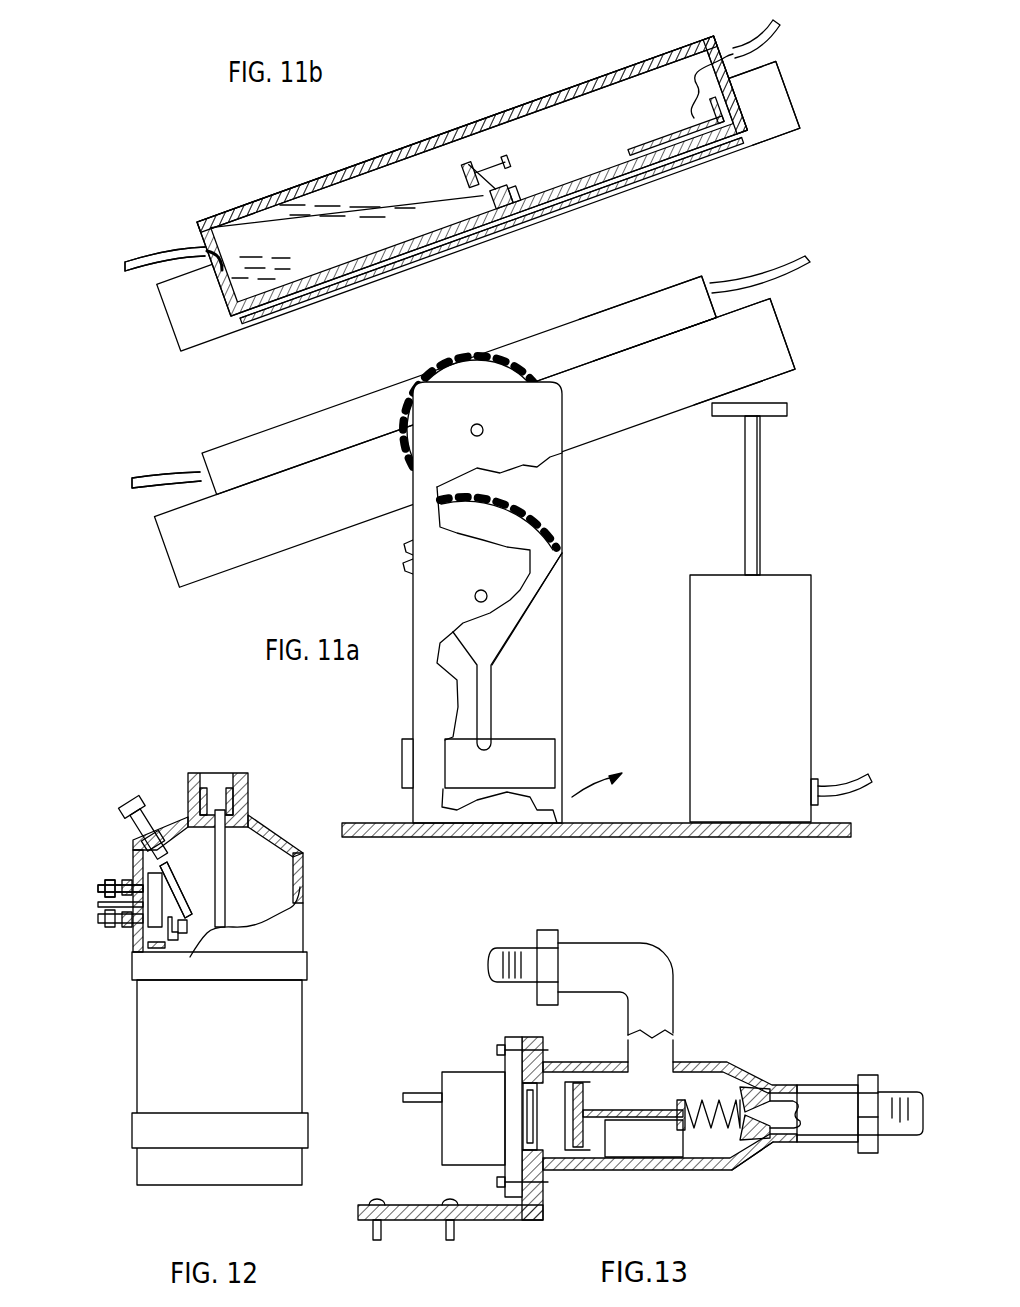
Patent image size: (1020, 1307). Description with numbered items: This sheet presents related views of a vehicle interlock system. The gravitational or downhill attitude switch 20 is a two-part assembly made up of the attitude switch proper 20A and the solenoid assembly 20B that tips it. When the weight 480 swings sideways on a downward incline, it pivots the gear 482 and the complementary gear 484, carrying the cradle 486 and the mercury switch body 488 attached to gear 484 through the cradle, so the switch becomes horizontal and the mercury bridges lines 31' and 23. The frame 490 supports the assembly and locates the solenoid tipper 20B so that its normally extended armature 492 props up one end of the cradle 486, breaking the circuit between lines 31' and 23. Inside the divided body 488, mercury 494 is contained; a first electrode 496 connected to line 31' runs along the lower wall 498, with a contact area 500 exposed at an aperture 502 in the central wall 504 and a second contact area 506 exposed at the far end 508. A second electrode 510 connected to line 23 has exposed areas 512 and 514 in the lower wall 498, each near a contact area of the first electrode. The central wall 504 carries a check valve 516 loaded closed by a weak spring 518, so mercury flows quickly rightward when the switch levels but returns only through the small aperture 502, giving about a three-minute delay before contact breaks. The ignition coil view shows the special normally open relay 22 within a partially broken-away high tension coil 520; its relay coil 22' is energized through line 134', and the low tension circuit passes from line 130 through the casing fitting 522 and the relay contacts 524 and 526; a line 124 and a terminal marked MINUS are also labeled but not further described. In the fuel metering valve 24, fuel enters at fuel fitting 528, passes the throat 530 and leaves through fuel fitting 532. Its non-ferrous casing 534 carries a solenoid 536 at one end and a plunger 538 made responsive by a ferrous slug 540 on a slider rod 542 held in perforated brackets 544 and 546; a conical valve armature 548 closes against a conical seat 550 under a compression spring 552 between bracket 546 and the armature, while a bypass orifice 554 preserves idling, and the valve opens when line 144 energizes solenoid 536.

In FIG. 11a, the gravitational attitude switch 20 is at (823, 317).
In FIG. 11a, the attitude switch proper 20A is at (598, 320).
In FIG. 11a, the solenoid assembly 20B is at (818, 647).
In FIG. 11b, the line 23 is at (782, 30).
In FIG. 11a, the line 23 is at (768, 265).
In FIG. 13, the fuel metering valve 24 is at (699, 1040).
In FIG. 11b, the line 31' is at (170, 246).
In FIG. 11a, the line 31' is at (145, 499).
In FIG. 11a, the outlet tube 124 is at (850, 782).
In FIG. 12, the line 130 is at (126, 806).
In FIG. 12, the line 134' is at (101, 871).
In FIG. 13, the line 144 is at (417, 1092).
In FIG. 12, the special N.O. relay 22 is at (101, 906).
In FIG. 12, the relay coil 22' is at (177, 884).
In FIG. 12, the minus terminal MINUS is at (95, 922).
In FIG. 11a, the weight 480 is at (532, 738).
In FIG. 11a, the gear 482 is at (563, 527).
In FIG. 11a, the complementary gear 484 is at (477, 352).
In FIG. 11a, the cradle 486 is at (243, 562).
In FIG. 11b, the mercury switch body 488 is at (553, 92).
In FIG. 11a, the mercury switch body 488 is at (252, 442).
In FIG. 11a, the frame 490 is at (418, 658).
In FIG. 11a, the armature 492 is at (762, 498).
In FIG. 11b, the mercury 494 is at (322, 200).
In FIG. 11b, the first electrode 496 is at (230, 300).
In FIG. 11b, the lower wall 498 is at (360, 270).
In FIG. 11b, the contact area 500 is at (458, 242).
In FIG. 11b, the aperture 502 is at (517, 187).
In FIG. 11b, the central wall 504 is at (463, 157).
In FIG. 11b, the second contact area 506 is at (713, 107).
In FIG. 11b, the far end 508 is at (730, 94).
In FIG. 11b, the second electrode 510 is at (617, 167).
In FIG. 11b, the exposed area 512 is at (504, 222).
In FIG. 11b, the exposed area 514 is at (682, 117).
In FIG. 11b, the check valve 516 is at (483, 173).
In FIG. 11b, the spring 518 is at (483, 137).
In FIG. 12, the high tension ignition coil 520 is at (150, 1058).
In FIG. 12, the casing fitting 522 is at (140, 838).
In FIG. 12, the contact 524 is at (183, 934).
In FIG. 12, the contact 526 is at (172, 940).
In FIG. 13, the fuel fitting 528 is at (487, 957).
In FIG. 13, the throat 530 is at (773, 1142).
In FIG. 13, the fuel fitting 532 is at (897, 1136).
In FIG. 13, the non-ferrous casing 534 is at (647, 1172).
In FIG. 13, the solenoid 536 is at (436, 1158).
In FIG. 13, the plunger 538 is at (633, 1140).
In FIG. 13, the ferrous slug 540 is at (570, 1110).
In FIG. 13, the slider rod 542 is at (650, 1108).
In FIG. 13, the perforated bracket 544 is at (600, 1152).
In FIG. 13, the perforated bracket 546 is at (708, 1162).
In FIG. 13, the conical valve armature 548 is at (765, 1140).
In FIG. 13, the conical seat 550 is at (748, 1090).
In FIG. 13, the compression spring 552 is at (712, 1098).
In FIG. 13, the bypass orifice 554 is at (785, 1102).